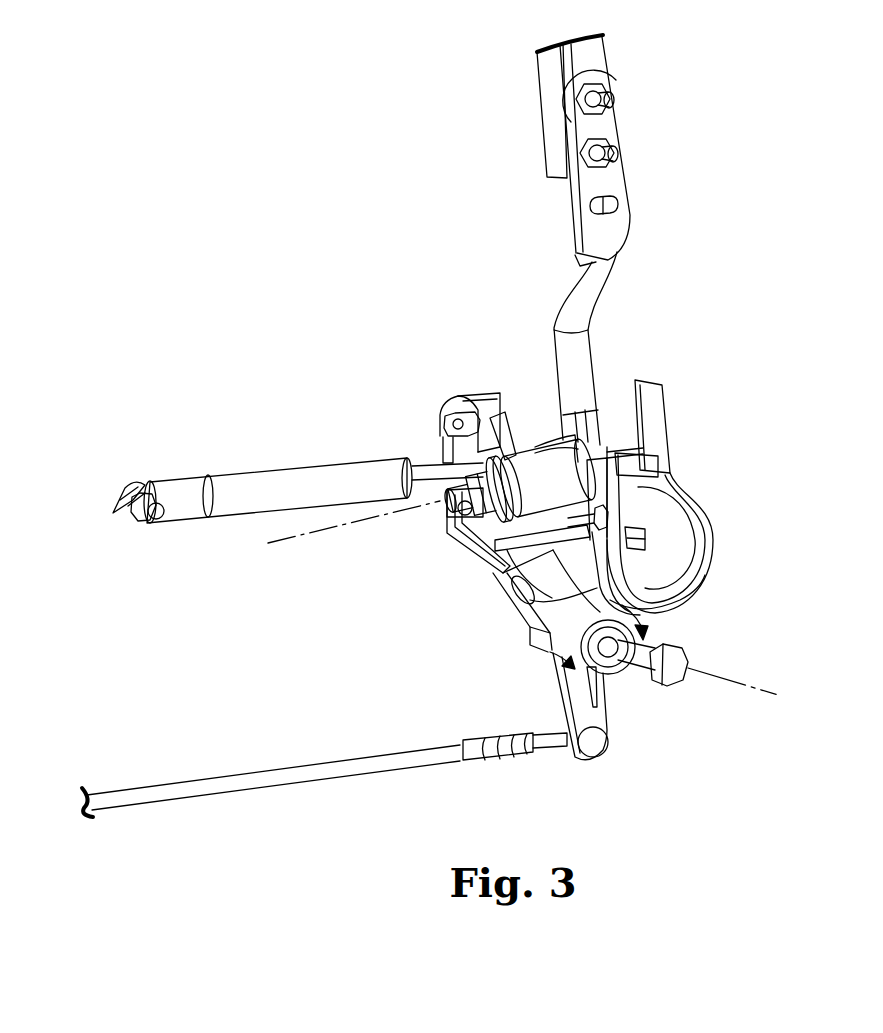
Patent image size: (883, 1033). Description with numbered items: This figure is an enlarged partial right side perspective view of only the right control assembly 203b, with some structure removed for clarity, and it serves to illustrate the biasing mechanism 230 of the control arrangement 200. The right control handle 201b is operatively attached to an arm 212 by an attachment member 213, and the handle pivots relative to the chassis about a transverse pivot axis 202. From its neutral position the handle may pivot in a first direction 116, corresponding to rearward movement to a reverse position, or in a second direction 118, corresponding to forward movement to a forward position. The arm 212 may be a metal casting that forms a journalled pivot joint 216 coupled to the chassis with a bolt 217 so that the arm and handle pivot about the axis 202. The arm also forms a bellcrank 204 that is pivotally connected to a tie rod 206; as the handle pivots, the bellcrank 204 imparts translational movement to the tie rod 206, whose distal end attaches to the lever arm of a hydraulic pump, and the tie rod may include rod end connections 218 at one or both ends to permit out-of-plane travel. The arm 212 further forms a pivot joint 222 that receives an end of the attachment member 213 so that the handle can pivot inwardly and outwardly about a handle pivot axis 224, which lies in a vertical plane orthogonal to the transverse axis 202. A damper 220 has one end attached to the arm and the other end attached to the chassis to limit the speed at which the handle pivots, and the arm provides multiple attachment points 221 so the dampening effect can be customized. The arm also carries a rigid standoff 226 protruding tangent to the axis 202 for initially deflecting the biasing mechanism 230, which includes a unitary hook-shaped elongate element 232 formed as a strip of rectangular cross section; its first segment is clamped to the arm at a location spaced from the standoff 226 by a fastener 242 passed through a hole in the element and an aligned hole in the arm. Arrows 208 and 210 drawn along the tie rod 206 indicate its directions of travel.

The right control handle 201b is at (548, 106).
The attachment member 213 is at (603, 297).
The control assembly and handle arrangement 200 is at (696, 462).
The standoff 226 is at (633, 452).
The biasing mechanism 230 is at (696, 523).
The elongate element 232 is at (705, 496).
The fastener 242 is at (617, 533).
The right control assembly 203b is at (484, 523).
The arm 212 is at (517, 410).
The attachment points 221 is at (437, 462).
The pivot joint 222 is at (545, 440).
The journalled pivot joint 216 is at (528, 650).
The second direction 118 is at (638, 612).
The first direction 116 is at (553, 650).
The bolt 217 is at (667, 686).
The transverse pivot axis 202 is at (752, 683).
The bellcrank 204 is at (589, 711).
The rod end connections 218 is at (565, 727).
The damper 220 is at (313, 463).
The handle pivot axis 224 is at (295, 545).
The tie rod 206 is at (324, 781).
The cable pull direction 208 is at (443, 792).
The cable release direction 210 is at (318, 807).